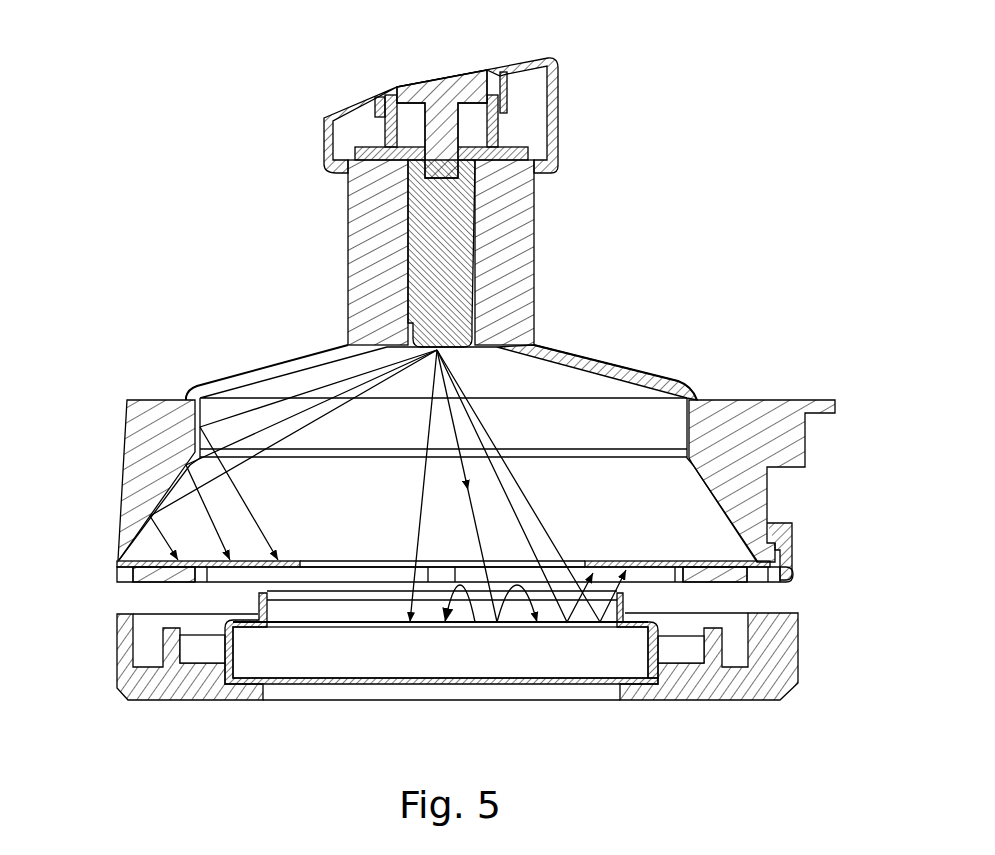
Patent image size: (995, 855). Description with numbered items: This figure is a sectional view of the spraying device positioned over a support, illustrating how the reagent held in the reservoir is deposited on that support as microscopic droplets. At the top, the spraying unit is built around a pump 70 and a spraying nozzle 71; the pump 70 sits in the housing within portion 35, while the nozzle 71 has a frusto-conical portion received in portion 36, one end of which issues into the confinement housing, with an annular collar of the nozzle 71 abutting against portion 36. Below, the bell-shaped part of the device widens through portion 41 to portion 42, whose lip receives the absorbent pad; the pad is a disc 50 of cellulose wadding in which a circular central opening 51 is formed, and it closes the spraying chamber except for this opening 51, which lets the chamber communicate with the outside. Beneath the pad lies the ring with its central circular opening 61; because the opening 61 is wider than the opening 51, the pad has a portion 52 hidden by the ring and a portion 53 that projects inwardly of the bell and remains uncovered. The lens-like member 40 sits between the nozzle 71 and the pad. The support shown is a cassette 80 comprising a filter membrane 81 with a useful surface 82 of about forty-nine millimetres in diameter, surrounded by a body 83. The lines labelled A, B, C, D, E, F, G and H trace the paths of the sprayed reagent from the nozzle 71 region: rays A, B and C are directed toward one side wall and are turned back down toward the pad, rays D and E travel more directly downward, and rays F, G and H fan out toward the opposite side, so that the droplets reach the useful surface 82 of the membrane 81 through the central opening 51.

The portion 35 is at (556, 102).
The portion 36 is at (363, 204).
The lens 40 is at (549, 356).
The housing 41 is at (717, 417).
The portion 42 is at (747, 513).
The disc 50 is at (113, 565).
The central opening 51 is at (205, 577).
The portion 52 is at (122, 571).
The portion 53 is at (190, 569).
The circular opening 61 is at (680, 573).
The pump 70 is at (440, 92).
The spraying nozzle 71 is at (450, 265).
The cassette 80 is at (586, 736).
The filter membrane 81 is at (485, 622).
The useful surface 82 is at (475, 622).
The body 83 is at (653, 647).
The light ray A is at (250, 408).
The light ray B is at (290, 417).
The light ray C is at (320, 418).
The light ray D is at (318, 546).
The light ray E is at (418, 523).
The light ray F is at (467, 470).
The light ray G is at (503, 480).
The light ray H is at (532, 502).